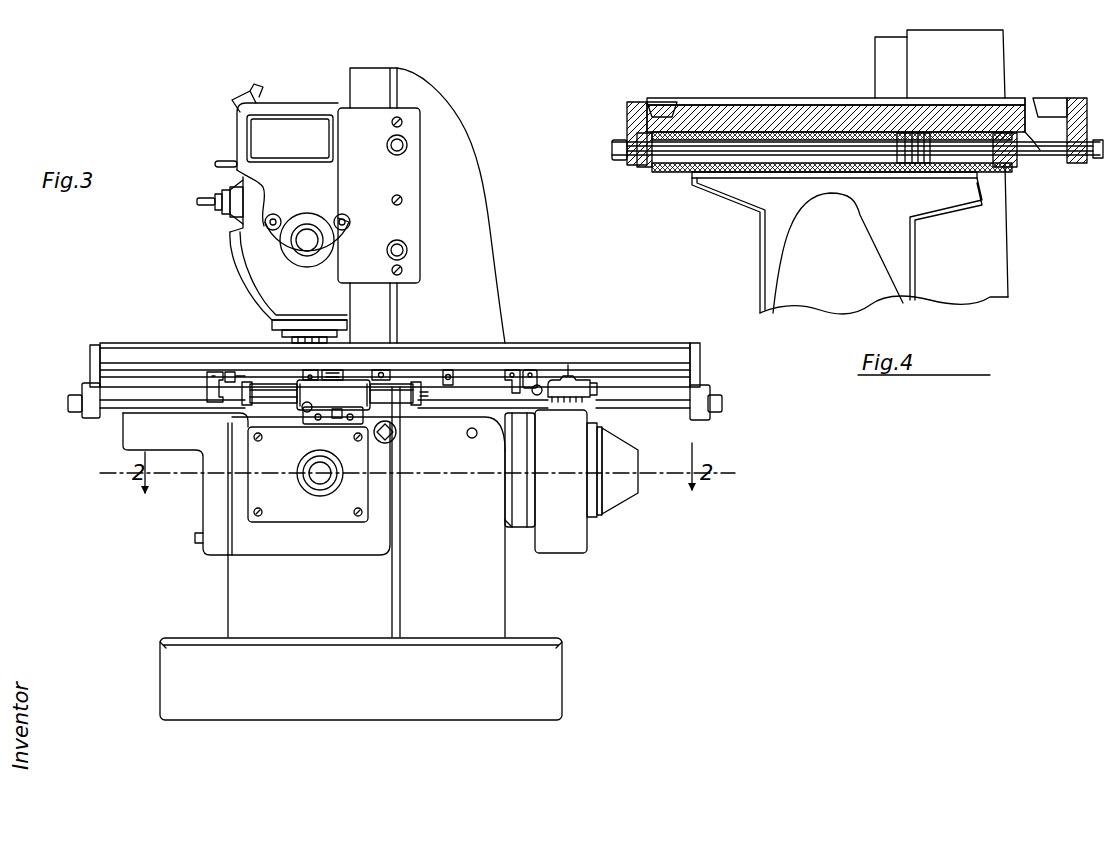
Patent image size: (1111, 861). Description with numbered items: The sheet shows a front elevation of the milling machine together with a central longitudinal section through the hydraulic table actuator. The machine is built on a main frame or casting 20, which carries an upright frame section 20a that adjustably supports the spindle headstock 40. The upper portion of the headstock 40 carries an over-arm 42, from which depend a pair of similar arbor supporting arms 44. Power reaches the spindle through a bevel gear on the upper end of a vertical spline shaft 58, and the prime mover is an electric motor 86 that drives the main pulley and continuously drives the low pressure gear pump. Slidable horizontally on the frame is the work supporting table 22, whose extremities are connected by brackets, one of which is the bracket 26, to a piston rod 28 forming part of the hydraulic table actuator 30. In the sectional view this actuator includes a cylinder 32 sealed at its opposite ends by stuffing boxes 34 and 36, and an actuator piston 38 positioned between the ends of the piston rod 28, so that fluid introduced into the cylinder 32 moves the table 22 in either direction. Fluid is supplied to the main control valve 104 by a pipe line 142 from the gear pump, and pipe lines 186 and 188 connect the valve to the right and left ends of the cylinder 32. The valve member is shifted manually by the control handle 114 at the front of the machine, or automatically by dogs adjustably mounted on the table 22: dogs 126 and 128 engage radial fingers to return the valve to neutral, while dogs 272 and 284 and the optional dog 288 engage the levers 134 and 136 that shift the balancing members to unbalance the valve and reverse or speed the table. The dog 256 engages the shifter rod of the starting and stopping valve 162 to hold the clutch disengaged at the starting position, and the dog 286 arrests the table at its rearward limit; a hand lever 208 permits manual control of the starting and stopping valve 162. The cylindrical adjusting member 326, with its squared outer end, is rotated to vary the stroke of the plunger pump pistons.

In FIG. 3, the main frame 20 is at (500, 572).
In FIG. 4, the main frame 20 is at (760, 215).
In FIG. 3, the upright frame section 20a is at (556, 236).
In FIG. 4, the upright frame section 20a is at (1068, 70).
In FIG. 3, the work supporting table 22 is at (556, 343).
In FIG. 4, the work supporting table 22 is at (750, 105).
In FIG. 3, the bracket 26 is at (88, 385).
In FIG. 4, the bracket 26 is at (627, 140).
In FIG. 3, the piston rod 28 is at (115, 412).
In FIG. 4, the piston rod 28 is at (635, 158).
In FIG. 4, the hydraulic table actuator 30 is at (985, 200).
In FIG. 4, the cylinder 32 is at (690, 172).
In FIG. 4, the stuffing box 34 is at (647, 167).
In FIG. 4, the stuffing box 36 is at (1015, 168).
In FIG. 4, the actuator piston 38 is at (913, 160).
In FIG. 3, the spindle headstock 40 is at (222, 143).
In FIG. 3, the over-arm 42 is at (285, 115).
In FIG. 3, the arbor supporting arm 44 is at (277, 187).
In FIG. 3, the vertical spline shaft 58 is at (300, 344).
In FIG. 3, the electric motor 86 is at (625, 494).
In FIG. 3, the main control valve 104 is at (280, 432).
In FIG. 3, the control handle 114 is at (340, 425).
In FIG. 3, the dog 126 is at (340, 373).
In FIG. 3, the dog 128 is at (390, 373).
In FIG. 3, the lever 134 is at (238, 384).
In FIG. 3, the lever 136 is at (422, 395).
In FIG. 3, the pipe line 142 is at (343, 407).
In FIG. 3, the starting and stopping valve 162 is at (580, 380).
In FIG. 3, the pipe line 186 is at (330, 408).
In FIG. 3, the pipe line 188 is at (352, 425).
In FIG. 3, the hand lever 208 is at (535, 398).
In FIG. 3, the dog 256 is at (540, 374).
In FIG. 3, the dog 272 is at (514, 370).
In FIG. 3, the dog 284 is at (455, 372).
In FIG. 3, the dog 286 is at (334, 366).
In FIG. 3, the dog 288 is at (213, 372).
In FIG. 3, the cylindrical adjusting member 326 is at (320, 480).